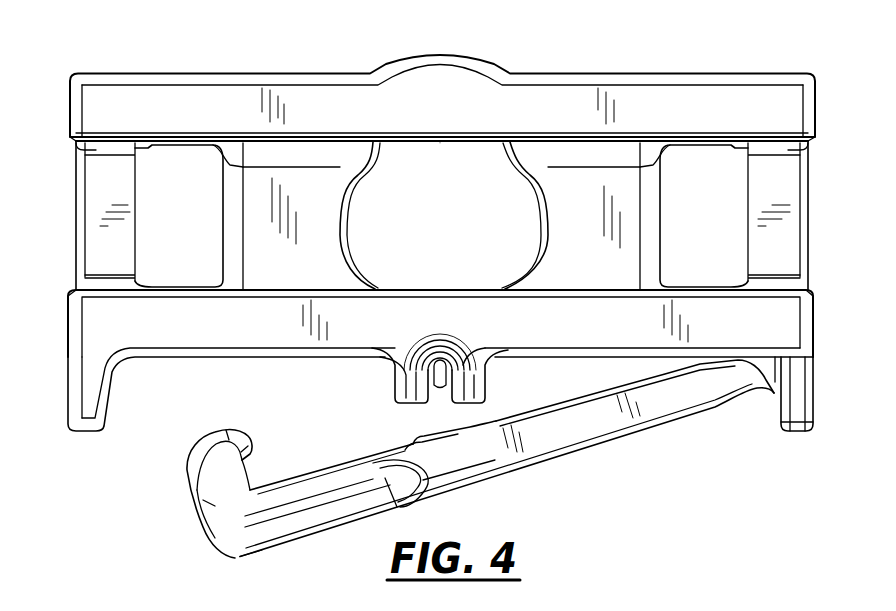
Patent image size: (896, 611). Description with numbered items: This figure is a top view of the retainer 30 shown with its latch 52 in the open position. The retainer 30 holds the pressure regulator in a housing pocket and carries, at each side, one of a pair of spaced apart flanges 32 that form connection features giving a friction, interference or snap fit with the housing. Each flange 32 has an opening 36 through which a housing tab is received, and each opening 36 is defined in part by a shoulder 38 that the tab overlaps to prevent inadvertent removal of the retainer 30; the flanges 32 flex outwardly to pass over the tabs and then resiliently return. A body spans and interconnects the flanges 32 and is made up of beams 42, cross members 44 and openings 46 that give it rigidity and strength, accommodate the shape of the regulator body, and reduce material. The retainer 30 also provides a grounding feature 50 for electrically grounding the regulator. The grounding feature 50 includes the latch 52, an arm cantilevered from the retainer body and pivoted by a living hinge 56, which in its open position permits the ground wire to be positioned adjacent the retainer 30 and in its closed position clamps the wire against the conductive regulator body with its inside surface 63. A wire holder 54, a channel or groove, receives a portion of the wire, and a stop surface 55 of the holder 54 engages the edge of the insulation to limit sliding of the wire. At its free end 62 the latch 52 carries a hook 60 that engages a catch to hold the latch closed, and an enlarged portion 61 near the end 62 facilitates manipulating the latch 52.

The retainer 30 is at (444, 235).
The flanges 32 is at (812, 139).
The openings 36 is at (94, 146).
The shoulder 38 is at (100, 203).
The beams 42 is at (268, 106).
The cross members 44 is at (318, 223).
The openings 46 is at (477, 158).
The grounding feature 50 is at (462, 485).
The latch 52 is at (657, 413).
The wire holder 54 is at (478, 385).
The stop surface 55 is at (445, 362).
The living hinge 56 is at (748, 362).
The hook 60 is at (242, 466).
The enlarged portion 61 is at (264, 552).
The free end 62 is at (204, 540).
The inside surface 63 is at (437, 433).